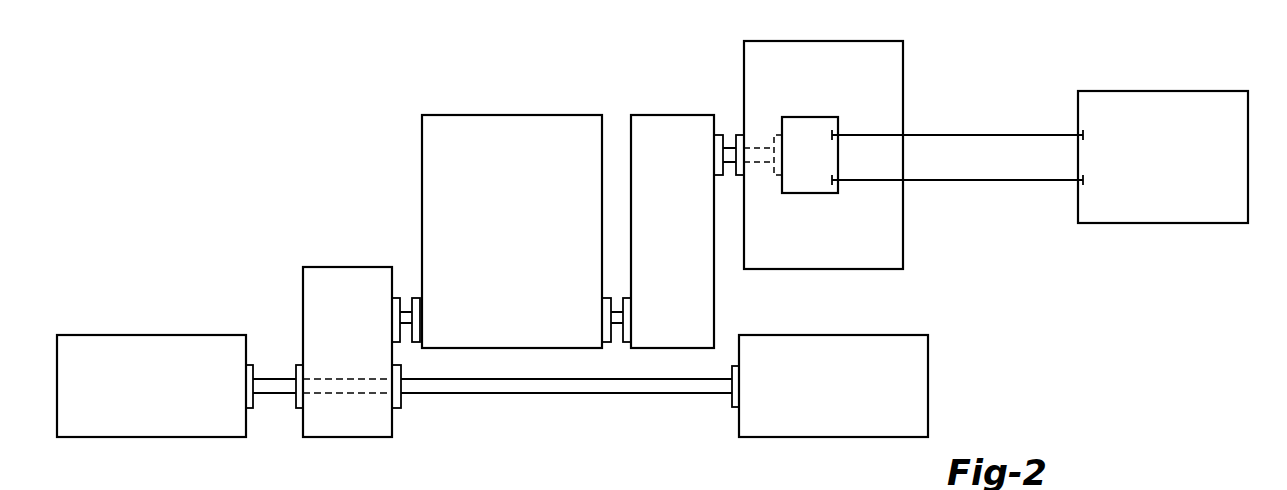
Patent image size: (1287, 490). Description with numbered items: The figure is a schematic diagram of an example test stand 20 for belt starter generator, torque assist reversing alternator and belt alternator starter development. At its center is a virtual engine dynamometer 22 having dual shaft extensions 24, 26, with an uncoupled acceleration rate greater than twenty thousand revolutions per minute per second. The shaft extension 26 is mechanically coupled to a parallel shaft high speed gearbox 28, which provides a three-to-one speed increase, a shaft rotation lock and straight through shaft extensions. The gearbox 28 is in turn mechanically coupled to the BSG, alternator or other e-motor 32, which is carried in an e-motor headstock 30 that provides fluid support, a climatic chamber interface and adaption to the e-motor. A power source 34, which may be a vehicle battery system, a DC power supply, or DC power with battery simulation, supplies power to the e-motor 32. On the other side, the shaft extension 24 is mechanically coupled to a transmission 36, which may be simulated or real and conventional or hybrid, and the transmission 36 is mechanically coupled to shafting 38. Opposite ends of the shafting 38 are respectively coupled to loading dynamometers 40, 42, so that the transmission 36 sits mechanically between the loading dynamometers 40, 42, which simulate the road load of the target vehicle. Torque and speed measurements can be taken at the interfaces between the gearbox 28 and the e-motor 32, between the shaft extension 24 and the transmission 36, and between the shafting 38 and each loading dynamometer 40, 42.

The test stand 20 is at (266, 124).
The virtual engine dynamometer 22 is at (512, 115).
The shaft extension 24 is at (408, 307).
The shaft extension 26 is at (618, 307).
The parallel shaft high speed gearbox 28 is at (673, 115).
The e-motor headstock 30 is at (903, 80).
The BSG, alternator or other e-motor 32 is at (808, 117).
The power source 34 is at (1163, 91).
The transmission 36 is at (303, 302).
The shafting 38 is at (465, 393).
The loading dynamometer 40 is at (149, 333).
The loading dynamometer 42 is at (928, 386).